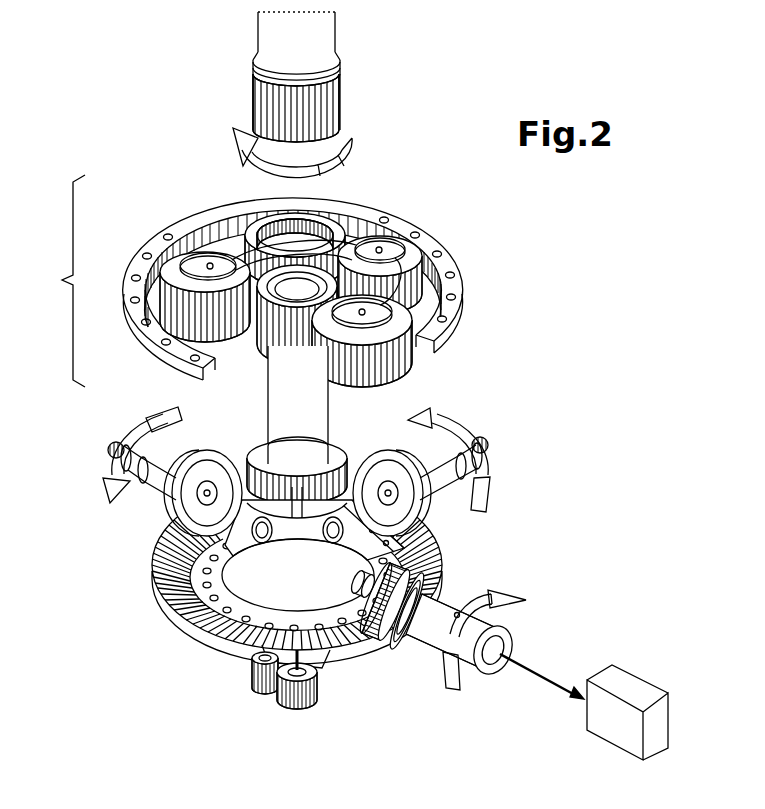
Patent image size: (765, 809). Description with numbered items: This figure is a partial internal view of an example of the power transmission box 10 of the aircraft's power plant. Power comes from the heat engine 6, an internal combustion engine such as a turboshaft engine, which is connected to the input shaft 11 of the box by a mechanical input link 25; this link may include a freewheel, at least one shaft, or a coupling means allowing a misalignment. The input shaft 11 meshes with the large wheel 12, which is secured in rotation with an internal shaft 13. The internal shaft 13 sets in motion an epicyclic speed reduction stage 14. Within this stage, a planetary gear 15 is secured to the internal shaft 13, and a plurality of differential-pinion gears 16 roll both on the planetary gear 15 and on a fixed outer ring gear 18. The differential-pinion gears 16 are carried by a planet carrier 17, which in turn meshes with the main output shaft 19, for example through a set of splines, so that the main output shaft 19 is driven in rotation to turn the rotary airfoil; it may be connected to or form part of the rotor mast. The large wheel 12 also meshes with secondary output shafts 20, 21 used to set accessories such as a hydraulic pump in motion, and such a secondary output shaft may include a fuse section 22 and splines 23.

The heat engine 6 is at (628, 683).
The power transmission box 10 is at (268, 699).
The input shaft 11 is at (517, 652).
The large wheel 12 is at (430, 542).
The internal shaft 13 is at (320, 427).
The epicyclic speed reduction stage 14 is at (280, 287).
The planetary gear 15 is at (277, 325).
The differential-pinion gears 16 is at (420, 290).
The planet carrier 17 is at (390, 250).
The fixed outer ring gear 18 is at (460, 308).
The main output shaft 19 is at (320, 33).
The secondary output shaft 20 is at (158, 492).
The secondary output shaft 21 is at (468, 452).
The fuse section 22 is at (167, 473).
The splines 23 is at (112, 447).
The mechanical input link 25 is at (543, 673).